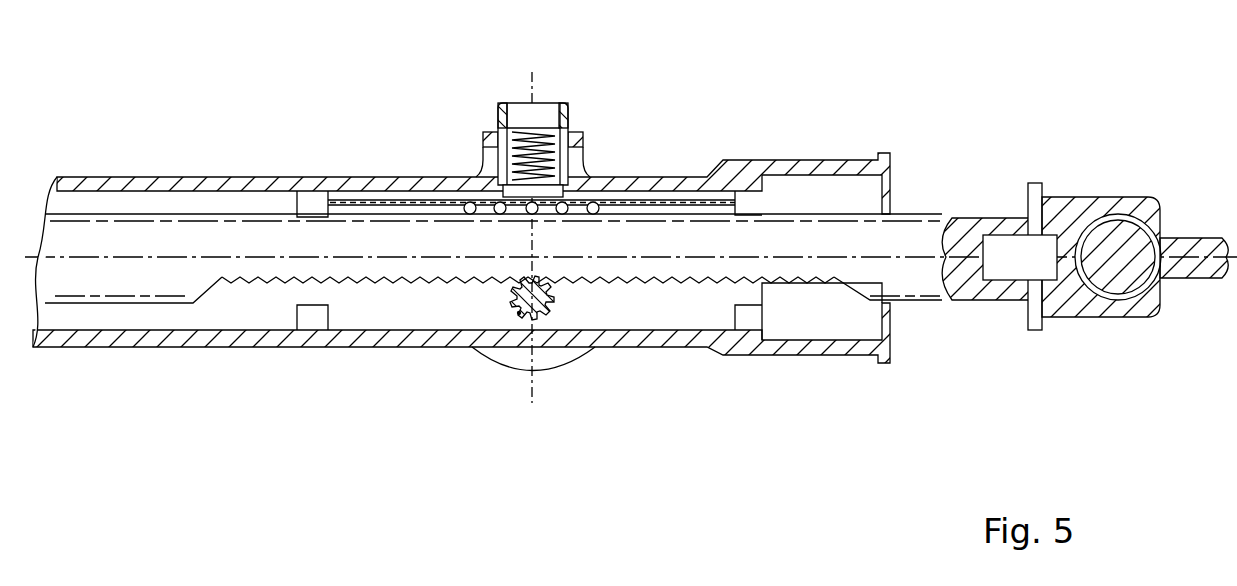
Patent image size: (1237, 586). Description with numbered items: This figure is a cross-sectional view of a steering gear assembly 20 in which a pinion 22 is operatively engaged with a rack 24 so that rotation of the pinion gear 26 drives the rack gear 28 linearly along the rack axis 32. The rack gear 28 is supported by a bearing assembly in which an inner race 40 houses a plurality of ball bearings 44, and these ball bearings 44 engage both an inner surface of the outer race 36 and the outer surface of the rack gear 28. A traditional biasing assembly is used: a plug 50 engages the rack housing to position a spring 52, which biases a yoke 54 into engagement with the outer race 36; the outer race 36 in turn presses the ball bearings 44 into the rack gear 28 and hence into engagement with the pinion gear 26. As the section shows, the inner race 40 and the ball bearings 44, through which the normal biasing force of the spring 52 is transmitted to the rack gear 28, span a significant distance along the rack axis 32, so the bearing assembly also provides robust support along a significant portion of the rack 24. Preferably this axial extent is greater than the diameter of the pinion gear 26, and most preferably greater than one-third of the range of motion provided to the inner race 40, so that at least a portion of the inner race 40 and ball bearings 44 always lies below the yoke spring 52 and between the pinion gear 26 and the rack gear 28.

The steering gear assembly 20 is at (276, 409).
The pinion 22 is at (540, 345).
The rack 24 is at (361, 288).
The pinion gear 26 is at (517, 315).
The rack gear 28 is at (698, 238).
The rack axis 32 is at (800, 256).
The outer race 36 is at (360, 198).
The inner race 40 is at (587, 185).
The ball bearings 44 is at (463, 203).
The plug 50 is at (507, 103).
The spring 52 is at (500, 128).
The yoke 54 is at (497, 188).